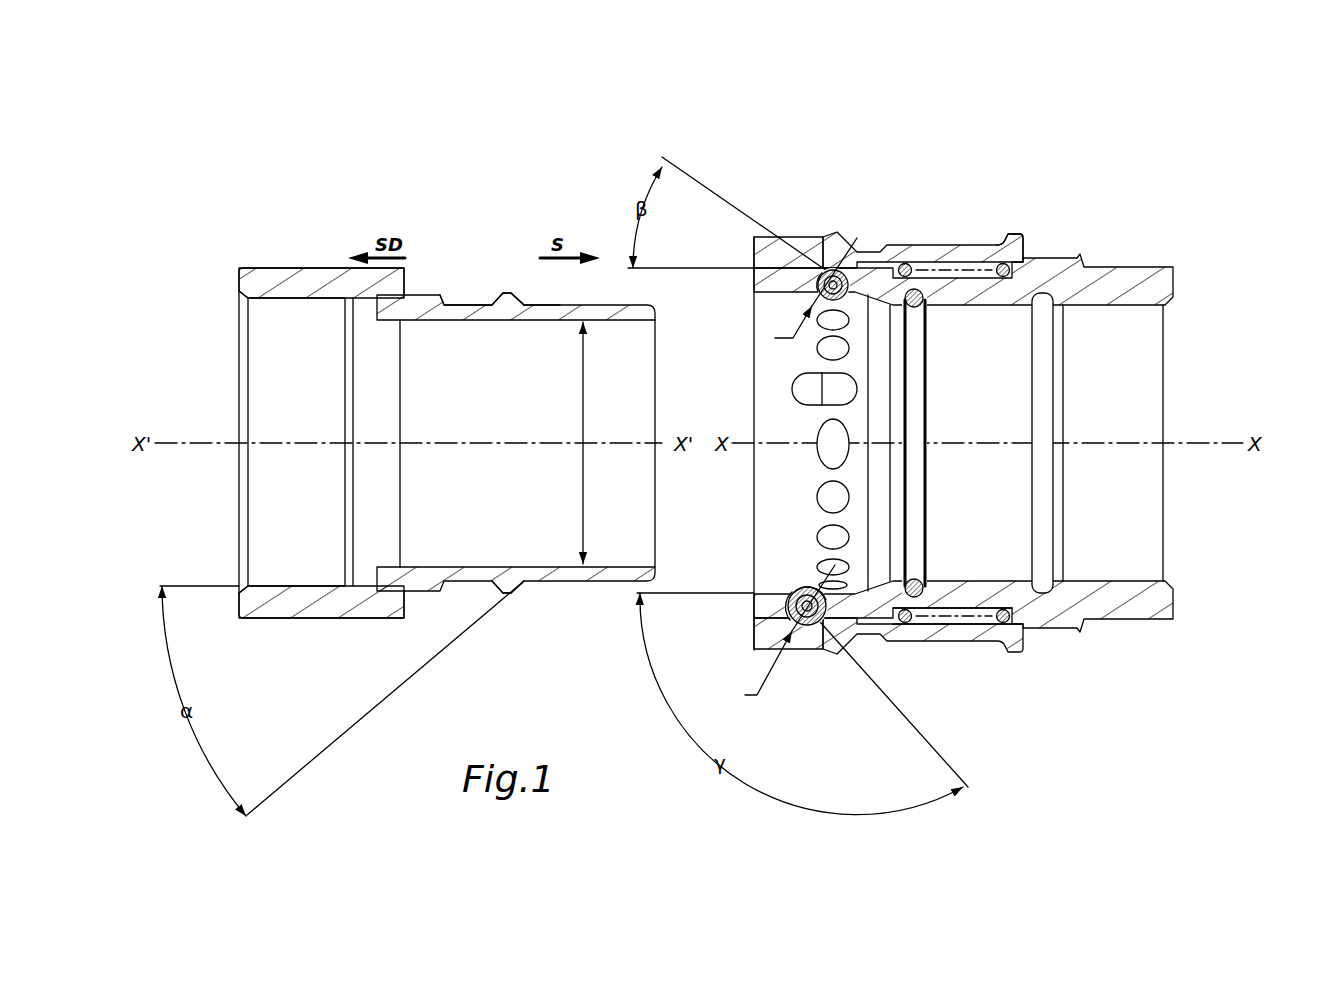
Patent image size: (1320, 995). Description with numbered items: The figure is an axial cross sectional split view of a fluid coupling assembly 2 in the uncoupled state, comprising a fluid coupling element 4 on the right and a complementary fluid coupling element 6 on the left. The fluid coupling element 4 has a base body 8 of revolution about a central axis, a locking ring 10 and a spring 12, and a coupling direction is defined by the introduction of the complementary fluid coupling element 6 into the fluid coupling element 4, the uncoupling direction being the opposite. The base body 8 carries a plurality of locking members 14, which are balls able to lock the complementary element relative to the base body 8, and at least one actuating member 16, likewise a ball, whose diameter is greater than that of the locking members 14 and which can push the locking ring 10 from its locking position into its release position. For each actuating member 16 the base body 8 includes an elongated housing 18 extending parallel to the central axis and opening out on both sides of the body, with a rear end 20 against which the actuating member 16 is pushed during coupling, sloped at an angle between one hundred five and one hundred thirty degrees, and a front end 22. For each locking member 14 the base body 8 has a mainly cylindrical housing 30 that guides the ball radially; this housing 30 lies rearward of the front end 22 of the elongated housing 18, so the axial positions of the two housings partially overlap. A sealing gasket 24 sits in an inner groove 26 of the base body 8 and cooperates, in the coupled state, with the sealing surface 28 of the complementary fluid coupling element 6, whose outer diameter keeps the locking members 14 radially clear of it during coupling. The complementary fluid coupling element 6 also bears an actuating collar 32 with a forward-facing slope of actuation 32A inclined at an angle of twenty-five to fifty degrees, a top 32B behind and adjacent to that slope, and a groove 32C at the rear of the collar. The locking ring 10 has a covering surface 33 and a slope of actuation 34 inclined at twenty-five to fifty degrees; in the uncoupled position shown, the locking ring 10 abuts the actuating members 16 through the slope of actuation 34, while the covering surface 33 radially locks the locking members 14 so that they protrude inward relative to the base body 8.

The fluid coupling assembly 2 is at (215, 133).
The fluid coupling element 4 is at (1142, 228).
The complementary fluid coupling element 6 is at (320, 252).
The base body 8 is at (1050, 268).
The locking ring 10 is at (852, 250).
The spring 12 is at (996, 258).
The locking member 14 is at (828, 268).
The actuating member 16 is at (820, 630).
The elongated housing 18 is at (807, 391).
The rear end 20 is at (853, 583).
The front end 22 is at (808, 590).
The sealing gasket 24 is at (914, 308).
The inner groove 26 is at (922, 628).
The sealing surface 28 is at (578, 594).
The housing 30 is at (847, 358).
The actuating collar 32 is at (500, 593).
The slope of actuation 32A is at (528, 285).
The top 32B is at (505, 285).
The groove 32C is at (469, 297).
The covering surface 33 is at (815, 290).
The slope of actuation 34 is at (790, 618).